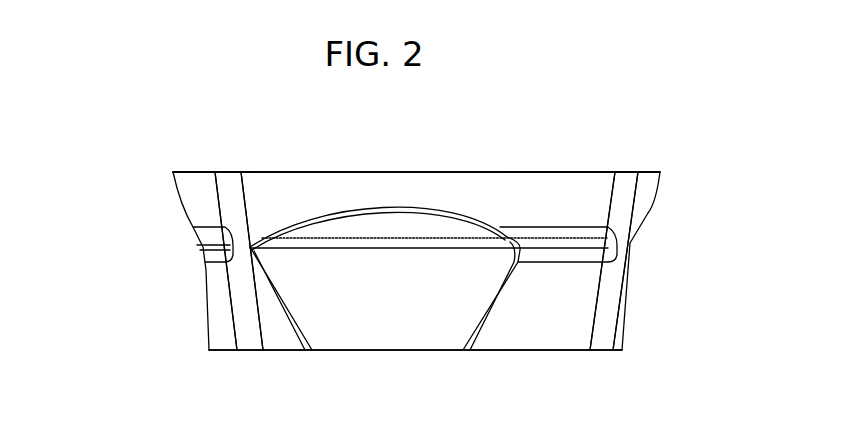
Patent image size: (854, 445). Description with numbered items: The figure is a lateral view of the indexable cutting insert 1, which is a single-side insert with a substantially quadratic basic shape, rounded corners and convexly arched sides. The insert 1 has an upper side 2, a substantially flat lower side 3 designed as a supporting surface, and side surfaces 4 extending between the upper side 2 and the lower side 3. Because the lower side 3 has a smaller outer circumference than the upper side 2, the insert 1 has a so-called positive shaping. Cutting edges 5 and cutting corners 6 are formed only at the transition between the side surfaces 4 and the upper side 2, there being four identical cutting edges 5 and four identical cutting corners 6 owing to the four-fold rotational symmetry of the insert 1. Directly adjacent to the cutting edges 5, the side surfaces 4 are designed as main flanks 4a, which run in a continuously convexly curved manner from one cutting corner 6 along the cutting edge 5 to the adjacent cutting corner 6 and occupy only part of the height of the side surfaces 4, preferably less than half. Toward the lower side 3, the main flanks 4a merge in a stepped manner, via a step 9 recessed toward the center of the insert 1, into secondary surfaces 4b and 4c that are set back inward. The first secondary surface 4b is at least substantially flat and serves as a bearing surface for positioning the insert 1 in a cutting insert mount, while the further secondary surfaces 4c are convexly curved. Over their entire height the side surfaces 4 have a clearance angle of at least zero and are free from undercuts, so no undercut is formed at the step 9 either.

The indexable cutting insert 1 is at (112, 165).
The upper side 2 is at (452, 164).
The lower side 3 is at (522, 358).
The side surfaces 4 is at (198, 312).
The main flanks 4a is at (477, 196).
The first secondary surface 4b is at (433, 320).
The further secondary surfaces 4c is at (280, 327).
The cutting edges 5 is at (173, 171).
The cutting corners 6 is at (232, 172).
The step 9 is at (200, 243).